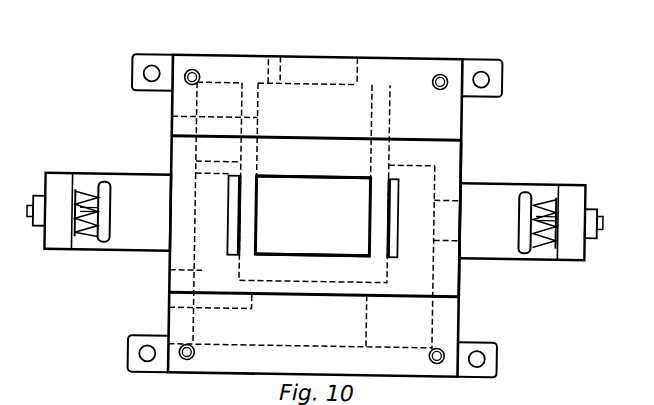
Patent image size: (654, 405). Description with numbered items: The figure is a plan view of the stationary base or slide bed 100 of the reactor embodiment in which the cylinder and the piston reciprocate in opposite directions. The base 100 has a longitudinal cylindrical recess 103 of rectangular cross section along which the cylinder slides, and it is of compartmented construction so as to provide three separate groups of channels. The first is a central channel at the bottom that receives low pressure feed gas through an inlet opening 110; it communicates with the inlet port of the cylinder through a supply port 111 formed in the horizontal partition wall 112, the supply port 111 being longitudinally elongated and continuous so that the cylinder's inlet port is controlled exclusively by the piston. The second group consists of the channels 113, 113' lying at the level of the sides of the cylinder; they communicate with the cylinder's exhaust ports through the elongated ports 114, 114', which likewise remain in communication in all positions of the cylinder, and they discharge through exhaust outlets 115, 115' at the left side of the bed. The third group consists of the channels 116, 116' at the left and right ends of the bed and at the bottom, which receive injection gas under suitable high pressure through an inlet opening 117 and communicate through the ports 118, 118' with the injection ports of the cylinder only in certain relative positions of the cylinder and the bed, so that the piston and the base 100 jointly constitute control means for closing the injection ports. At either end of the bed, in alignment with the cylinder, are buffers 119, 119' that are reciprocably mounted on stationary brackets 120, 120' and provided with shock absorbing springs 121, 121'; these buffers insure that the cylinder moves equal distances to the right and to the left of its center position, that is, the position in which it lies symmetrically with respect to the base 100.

The stationary base 100 is at (459, 122).
The longitudinal cylindrical recess 103 is at (443, 294).
The inlet opening 110 is at (323, 72).
The supply port 111 is at (314, 212).
The horizontal partition wall 112 is at (357, 177).
The channel 113 is at (300, 346).
The channel 113' is at (255, 55).
The port 114 is at (315, 193).
The port 114' is at (315, 117).
The exhaust outlet 115 is at (188, 310).
The exhaust outlet 115' is at (193, 127).
The channel 116 is at (168, 257).
The channel 116' is at (464, 258).
The inlet opening 117 is at (462, 204).
The port 118 is at (218, 215).
The port 118' is at (413, 218).
The buffer 119 is at (92, 231).
The buffer 119' is at (544, 206).
The stationary bracket 120 is at (85, 205).
The stationary bracket 120' is at (550, 216).
The shock absorbing spring 121 is at (73, 190).
The shock absorbing spring 121' is at (554, 247).